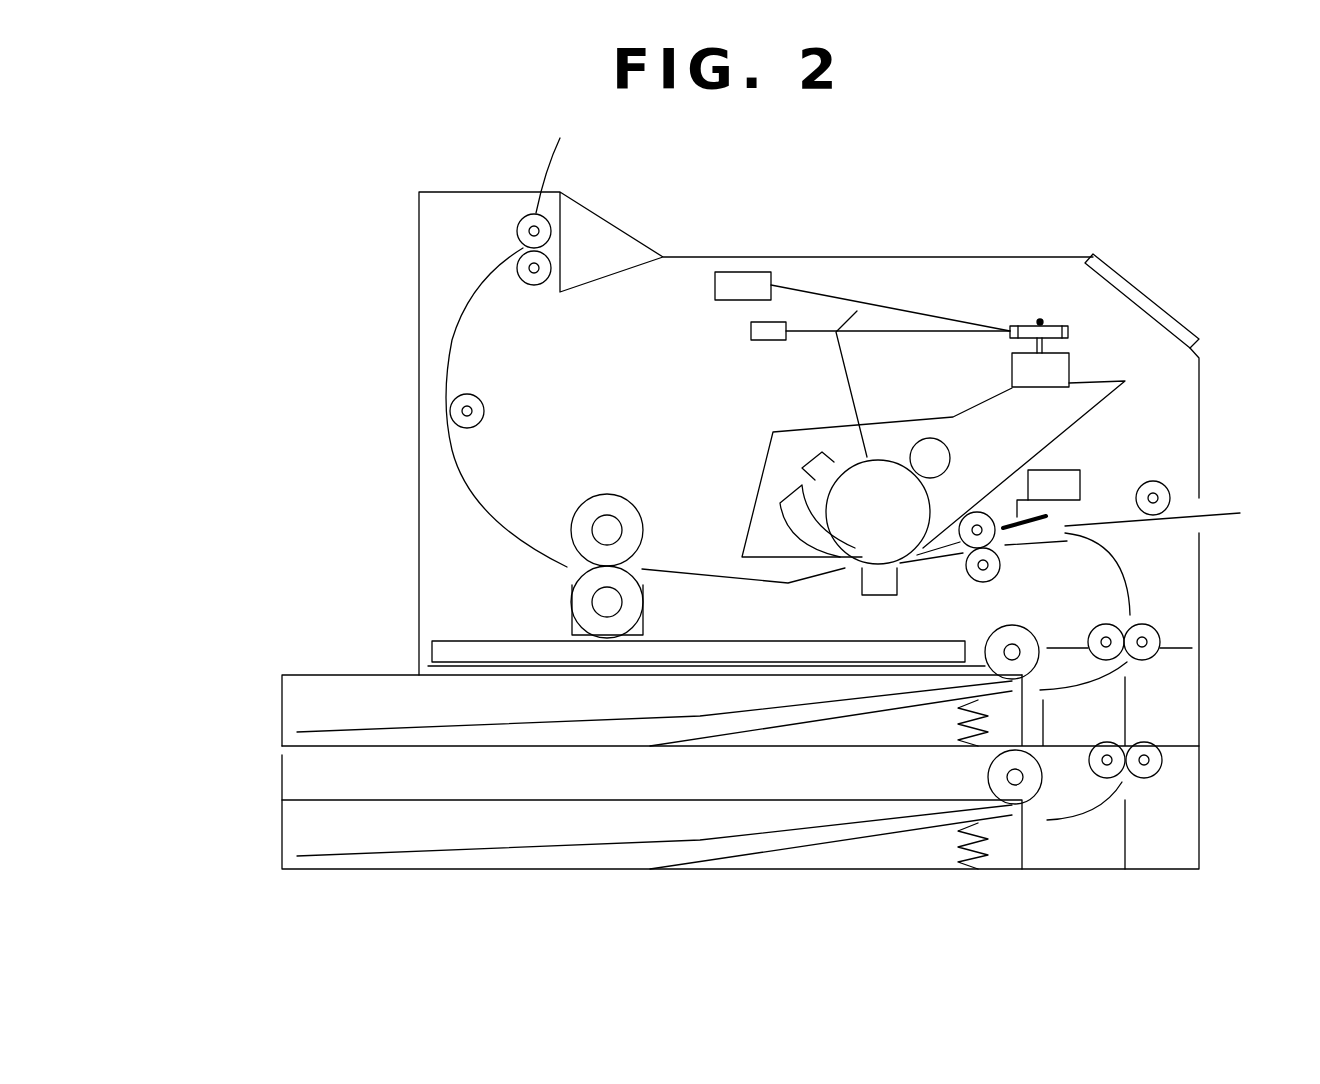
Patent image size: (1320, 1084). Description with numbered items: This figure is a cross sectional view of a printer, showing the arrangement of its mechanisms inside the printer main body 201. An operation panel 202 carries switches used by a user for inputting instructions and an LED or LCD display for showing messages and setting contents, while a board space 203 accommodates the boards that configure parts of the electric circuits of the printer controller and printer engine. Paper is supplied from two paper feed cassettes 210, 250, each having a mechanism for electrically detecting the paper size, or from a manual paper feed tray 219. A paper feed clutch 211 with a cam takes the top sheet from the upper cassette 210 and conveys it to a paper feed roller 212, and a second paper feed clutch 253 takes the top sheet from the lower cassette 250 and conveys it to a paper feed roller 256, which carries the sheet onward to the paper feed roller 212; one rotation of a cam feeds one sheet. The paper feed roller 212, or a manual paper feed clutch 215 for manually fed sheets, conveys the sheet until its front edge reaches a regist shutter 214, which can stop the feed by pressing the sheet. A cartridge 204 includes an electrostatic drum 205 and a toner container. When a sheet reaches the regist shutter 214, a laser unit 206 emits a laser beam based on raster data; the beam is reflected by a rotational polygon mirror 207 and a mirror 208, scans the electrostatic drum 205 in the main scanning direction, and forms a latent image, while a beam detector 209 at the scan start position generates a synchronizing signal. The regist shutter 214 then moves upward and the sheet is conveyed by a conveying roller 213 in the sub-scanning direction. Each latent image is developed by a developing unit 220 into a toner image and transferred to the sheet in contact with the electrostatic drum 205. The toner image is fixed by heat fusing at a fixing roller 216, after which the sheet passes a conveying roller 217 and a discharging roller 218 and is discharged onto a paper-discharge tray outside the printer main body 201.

The printer main body 201 is at (940, 256).
The operation panel 202 is at (1160, 302).
The board space 203 is at (708, 638).
The cartridge 204 is at (1087, 384).
The electrostatic drum 205 is at (882, 457).
The laser unit 206 is at (745, 272).
The rotational polygon mirror 207 is at (1045, 323).
The mirror 208 is at (828, 342).
The beam detector 209 is at (765, 342).
The paper feed cassette 210 is at (282, 712).
The paper feed clutch 211 is at (993, 628).
The paper feed roller 212 is at (1162, 632).
The conveying roller 213 is at (1002, 567).
The regist shutter 214 is at (1127, 473).
The manual paper feed clutch 215 is at (1167, 488).
The fixing roller 216 is at (607, 495).
The conveying roller 217 is at (483, 407).
The discharging roller 218 is at (556, 195).
The manual paper feed tray 219 is at (1213, 520).
The developing unit 220 is at (948, 443).
The paper feed cassette 250 is at (282, 808).
The paper feed clutch 253 is at (988, 772).
The paper feed roller 256 is at (1163, 760).